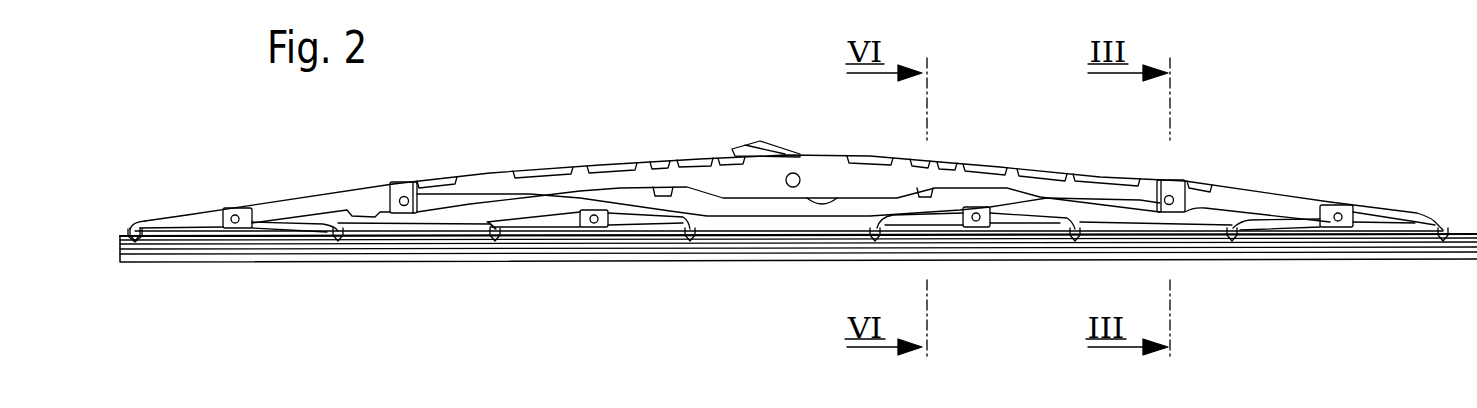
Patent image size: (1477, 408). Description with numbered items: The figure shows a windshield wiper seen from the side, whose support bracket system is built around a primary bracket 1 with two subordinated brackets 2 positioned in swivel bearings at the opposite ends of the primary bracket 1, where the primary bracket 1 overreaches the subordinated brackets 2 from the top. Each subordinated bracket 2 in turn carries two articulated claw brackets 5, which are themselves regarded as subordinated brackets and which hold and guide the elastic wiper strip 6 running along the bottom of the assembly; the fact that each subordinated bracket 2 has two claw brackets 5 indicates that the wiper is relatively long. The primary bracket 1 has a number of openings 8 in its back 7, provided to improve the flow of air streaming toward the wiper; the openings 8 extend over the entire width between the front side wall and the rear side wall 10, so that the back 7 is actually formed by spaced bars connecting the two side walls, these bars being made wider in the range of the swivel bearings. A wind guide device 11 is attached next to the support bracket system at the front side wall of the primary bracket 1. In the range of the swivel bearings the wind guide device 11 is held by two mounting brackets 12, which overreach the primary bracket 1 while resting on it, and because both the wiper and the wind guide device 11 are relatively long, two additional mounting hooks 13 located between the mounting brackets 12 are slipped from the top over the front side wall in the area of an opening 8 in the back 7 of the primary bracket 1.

The primary bracket 1 is at (813, 173).
The subordinated bracket 2 is at (312, 203).
The claw bracket 5 is at (169, 221).
The wiper strip 6 is at (773, 262).
The back 7 is at (578, 165).
The opening 8 is at (1048, 175).
The side wall 10 is at (990, 178).
The wind guide device 11 is at (628, 202).
The mounting bracket 12 is at (406, 194).
The mounting hook 13 is at (662, 163).